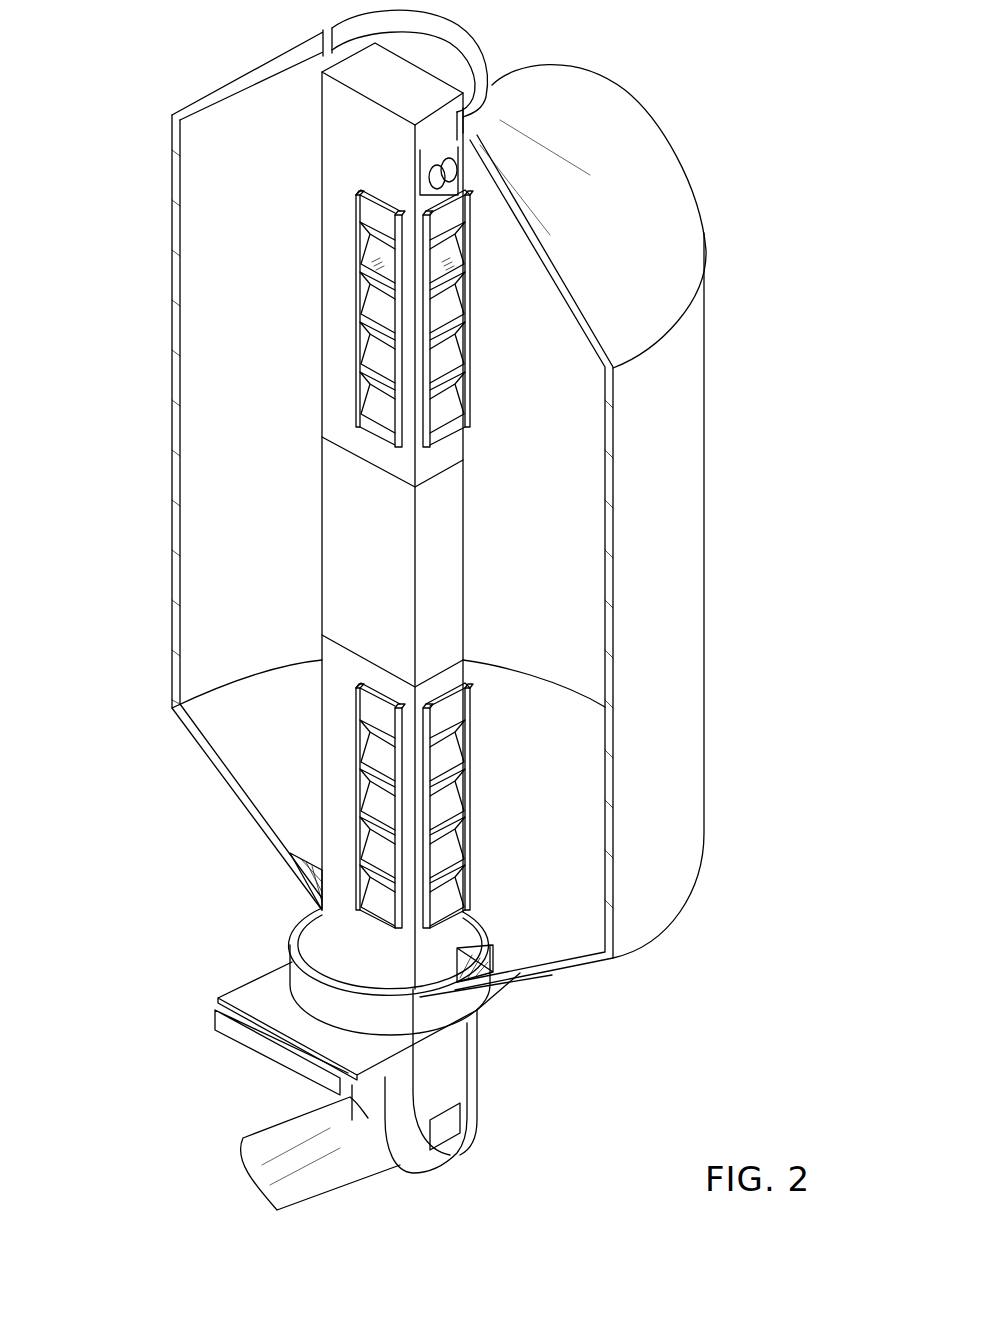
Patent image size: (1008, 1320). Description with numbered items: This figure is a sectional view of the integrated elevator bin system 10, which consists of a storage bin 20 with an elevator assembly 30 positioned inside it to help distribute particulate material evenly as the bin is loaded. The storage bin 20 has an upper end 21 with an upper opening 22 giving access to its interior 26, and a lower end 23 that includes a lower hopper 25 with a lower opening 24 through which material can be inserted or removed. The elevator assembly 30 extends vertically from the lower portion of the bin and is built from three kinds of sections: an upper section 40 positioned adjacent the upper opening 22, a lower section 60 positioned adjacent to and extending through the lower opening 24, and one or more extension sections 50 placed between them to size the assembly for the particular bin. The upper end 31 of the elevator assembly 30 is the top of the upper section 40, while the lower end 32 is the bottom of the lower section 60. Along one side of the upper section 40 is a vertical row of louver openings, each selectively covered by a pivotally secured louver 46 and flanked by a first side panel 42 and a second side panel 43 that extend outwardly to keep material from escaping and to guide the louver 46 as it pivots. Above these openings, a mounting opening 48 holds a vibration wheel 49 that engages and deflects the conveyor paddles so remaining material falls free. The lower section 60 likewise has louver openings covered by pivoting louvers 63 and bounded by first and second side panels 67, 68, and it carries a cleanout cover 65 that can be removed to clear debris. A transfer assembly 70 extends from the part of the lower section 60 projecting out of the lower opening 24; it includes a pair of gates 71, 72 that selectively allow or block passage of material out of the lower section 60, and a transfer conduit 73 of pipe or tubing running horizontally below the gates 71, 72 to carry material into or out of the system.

The integrated elevator bin system 10 is at (707, 100).
The storage bin 20 is at (712, 352).
The upper end 21 is at (593, 128).
The upper opening 22 is at (343, 25).
The lower end 23 is at (293, 935).
The lower opening 24 is at (462, 927).
The lower hopper 25 is at (218, 725).
The interior 26 is at (537, 420).
The elevator assembly 30 is at (318, 497).
The upper end 31 is at (363, 77).
The lower end 32 is at (460, 1050).
The upper section 40 is at (306, 309).
The first side panel 42 is at (372, 240).
The second side panel 43 is at (470, 287).
The louver 46 is at (373, 360).
The mounting opening 48 is at (460, 170).
The vibration wheel 49 is at (465, 135).
The extension section 50 is at (478, 575).
The lower section 60 is at (310, 816).
The louver 63 is at (377, 757).
The cleanout cover 65 is at (448, 1130).
The first side panel 67 is at (357, 737).
The second side panel 68 is at (400, 907).
The transfer assembly 70 is at (250, 1133).
The gate 71 is at (235, 1040).
The gate 72 is at (547, 983).
The transfer conduit 73 is at (327, 1160).